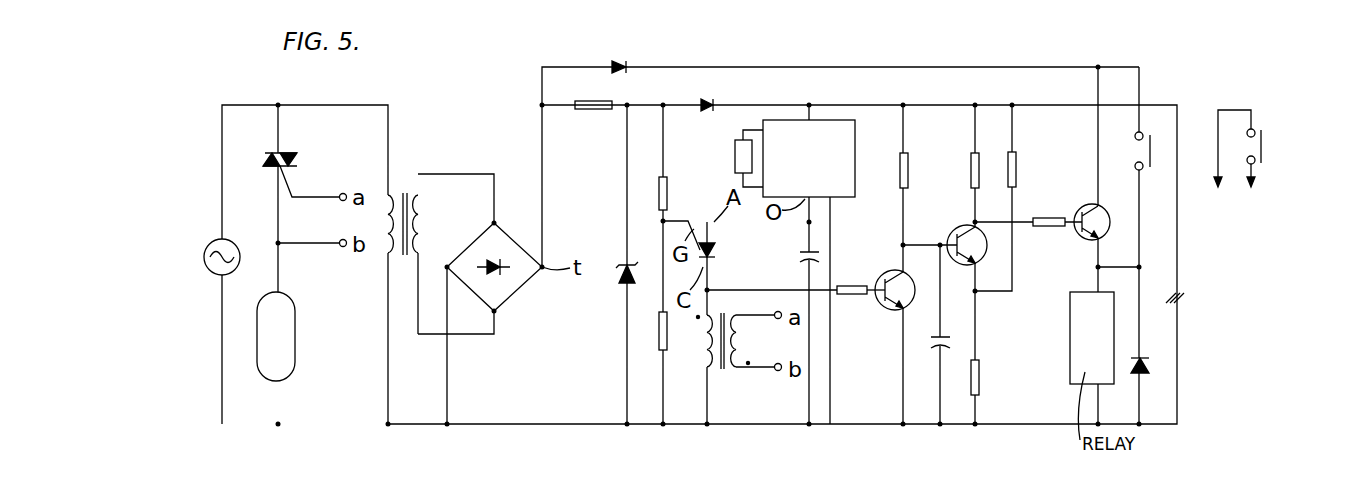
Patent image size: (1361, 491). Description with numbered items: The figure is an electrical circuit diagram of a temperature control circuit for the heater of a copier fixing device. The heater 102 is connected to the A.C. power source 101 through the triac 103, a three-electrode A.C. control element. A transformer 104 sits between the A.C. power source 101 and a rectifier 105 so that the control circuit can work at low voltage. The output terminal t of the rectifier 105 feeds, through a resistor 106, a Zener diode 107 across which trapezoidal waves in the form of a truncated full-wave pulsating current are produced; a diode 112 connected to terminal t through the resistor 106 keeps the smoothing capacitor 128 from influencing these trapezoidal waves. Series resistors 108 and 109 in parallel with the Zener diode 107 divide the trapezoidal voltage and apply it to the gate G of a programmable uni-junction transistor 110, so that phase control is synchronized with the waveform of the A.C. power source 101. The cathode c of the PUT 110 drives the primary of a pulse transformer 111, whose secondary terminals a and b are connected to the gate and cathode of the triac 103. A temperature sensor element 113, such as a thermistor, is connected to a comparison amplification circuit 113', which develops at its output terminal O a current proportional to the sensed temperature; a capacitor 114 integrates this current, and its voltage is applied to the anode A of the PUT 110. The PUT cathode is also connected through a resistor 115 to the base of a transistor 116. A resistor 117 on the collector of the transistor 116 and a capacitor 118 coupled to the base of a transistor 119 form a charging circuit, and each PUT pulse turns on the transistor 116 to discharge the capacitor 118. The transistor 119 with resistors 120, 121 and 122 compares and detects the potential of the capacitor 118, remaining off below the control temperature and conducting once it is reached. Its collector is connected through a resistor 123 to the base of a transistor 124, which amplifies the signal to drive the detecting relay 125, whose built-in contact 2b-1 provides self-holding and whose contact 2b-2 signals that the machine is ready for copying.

The A.C. power source 101 is at (214, 242).
The heater 102 is at (292, 318).
The triac 103 is at (288, 152).
The transformer 104 is at (390, 197).
The rectifier 105 is at (520, 284).
The resistor 106 is at (593, 110).
The Zener diode 107 is at (622, 262).
The resistor 108 is at (667, 195).
The resistor 109 is at (656, 330).
The programmable uni-junction transistor 110 is at (718, 255).
The pulse transformer 111 is at (736, 370).
The diode 112 is at (712, 100).
The temperature sensor element 113 is at (713, 142).
The comparison amplification circuit 113' is at (839, 135).
The capacitor 114 is at (820, 250).
The resistor 115 is at (850, 298).
The transistor 116 is at (880, 277).
The resistor 117 is at (907, 165).
The capacitor 118 is at (950, 338).
The transistor 119 is at (958, 230).
The resistor 120 is at (975, 150).
The resistor 121 is at (980, 375).
The resistor 122 is at (1014, 150).
The resistor 123 is at (1050, 217).
The transistor 124 is at (1085, 240).
The detecting relay 125 is at (1070, 325).
The smoothing capacitor 128 is at (1182, 300).
The contact 2b-1 is at (1152, 150).
The contact 2b-2 is at (1263, 140).